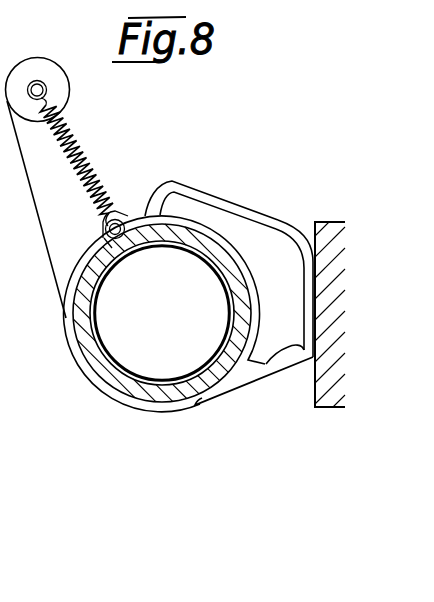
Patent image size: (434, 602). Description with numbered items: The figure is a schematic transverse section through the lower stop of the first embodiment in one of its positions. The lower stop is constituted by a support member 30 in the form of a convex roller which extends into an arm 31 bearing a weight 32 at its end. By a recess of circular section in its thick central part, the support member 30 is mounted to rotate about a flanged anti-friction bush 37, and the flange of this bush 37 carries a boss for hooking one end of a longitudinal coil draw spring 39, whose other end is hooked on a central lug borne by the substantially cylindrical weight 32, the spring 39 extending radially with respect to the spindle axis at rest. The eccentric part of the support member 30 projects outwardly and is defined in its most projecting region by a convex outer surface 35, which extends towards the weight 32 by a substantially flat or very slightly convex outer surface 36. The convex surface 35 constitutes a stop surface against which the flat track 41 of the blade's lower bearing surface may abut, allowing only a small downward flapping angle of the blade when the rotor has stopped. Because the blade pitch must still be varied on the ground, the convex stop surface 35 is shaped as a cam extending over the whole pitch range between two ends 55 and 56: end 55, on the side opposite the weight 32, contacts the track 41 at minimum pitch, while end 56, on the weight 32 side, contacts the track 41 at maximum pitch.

The support member 30 is at (207, 400).
The arm 31 is at (63, 217).
The weight 32 is at (57, 82).
The convex outer surface 35 is at (305, 258).
The substantially flat outer surface 36 is at (210, 200).
The flanged anti-friction bush 37 is at (103, 365).
The longitudinal coil draw spring 39 is at (92, 179).
The track 41 is at (308, 385).
The end of convex stop surface 55 is at (265, 364).
The end of convex stop surface 56 is at (277, 220).